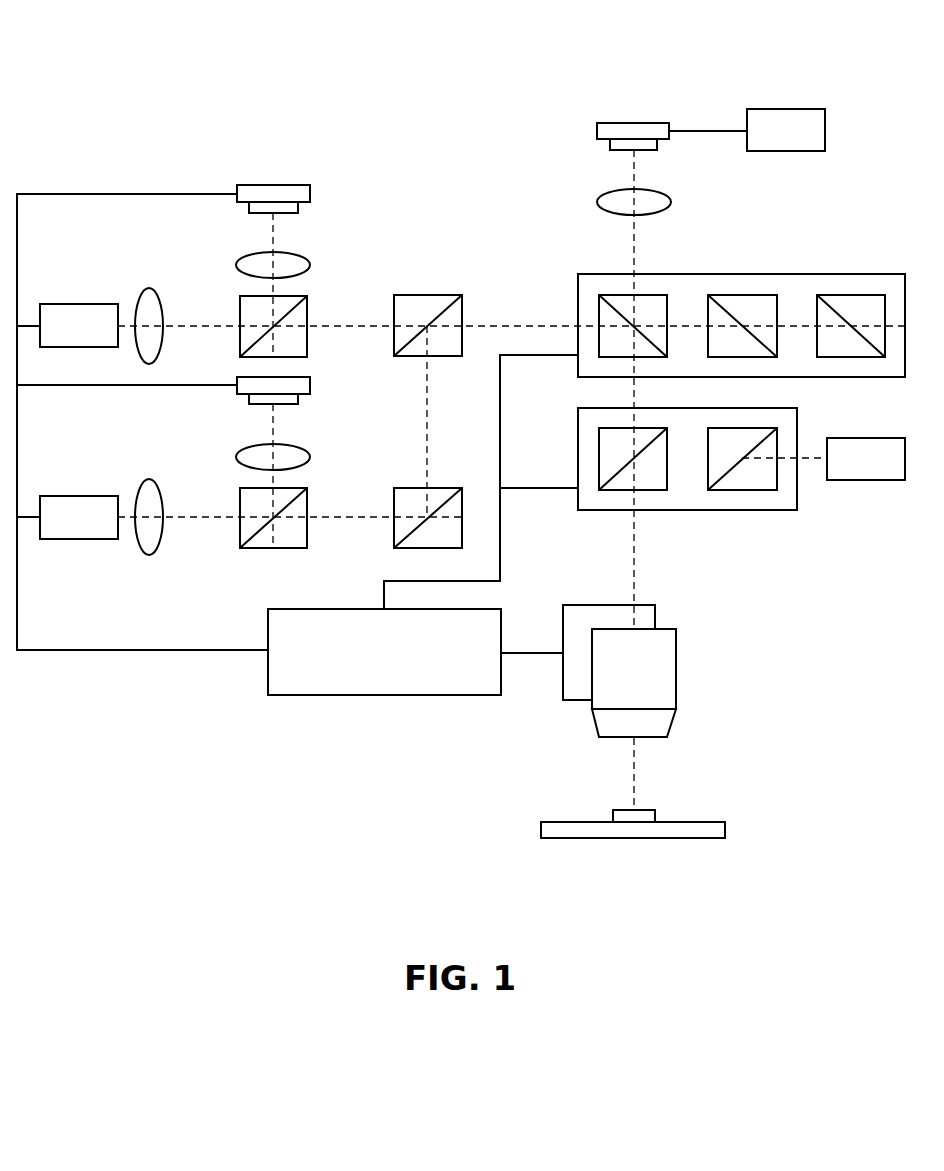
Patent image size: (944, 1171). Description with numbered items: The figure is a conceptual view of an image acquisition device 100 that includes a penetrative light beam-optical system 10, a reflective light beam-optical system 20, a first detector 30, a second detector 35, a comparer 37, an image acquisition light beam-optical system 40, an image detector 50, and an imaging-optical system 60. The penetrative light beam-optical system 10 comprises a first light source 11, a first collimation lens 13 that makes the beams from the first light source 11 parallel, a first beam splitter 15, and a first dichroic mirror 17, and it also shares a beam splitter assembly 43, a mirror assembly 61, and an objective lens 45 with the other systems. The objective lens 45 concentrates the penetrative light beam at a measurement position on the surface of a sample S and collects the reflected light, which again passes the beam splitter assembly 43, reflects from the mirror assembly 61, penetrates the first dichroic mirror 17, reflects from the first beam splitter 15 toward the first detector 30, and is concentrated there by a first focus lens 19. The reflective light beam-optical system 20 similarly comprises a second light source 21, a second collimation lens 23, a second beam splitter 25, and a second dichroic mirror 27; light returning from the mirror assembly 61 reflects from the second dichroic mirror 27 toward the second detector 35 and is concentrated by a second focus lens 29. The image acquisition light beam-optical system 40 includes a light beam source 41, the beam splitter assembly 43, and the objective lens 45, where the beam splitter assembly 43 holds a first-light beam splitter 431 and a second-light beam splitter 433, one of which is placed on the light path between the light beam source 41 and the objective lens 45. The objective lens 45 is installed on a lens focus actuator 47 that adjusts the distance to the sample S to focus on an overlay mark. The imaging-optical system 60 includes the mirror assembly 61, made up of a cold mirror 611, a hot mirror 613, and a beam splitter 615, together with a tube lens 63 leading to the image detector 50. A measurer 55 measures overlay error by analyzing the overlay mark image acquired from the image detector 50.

The image acquisition device 100 is at (81, 38).
The penetrative light beam-optical system 10 is at (350, 278).
The first light source 11 is at (98, 304).
The first collimation lens 13 is at (149, 288).
The first beam splitter 15 is at (240, 308).
The first dichroic mirror 17 is at (444, 295).
The first focus lens 19 is at (302, 254).
The first detector 30 is at (273, 185).
The reflective light beam-optical system 20 is at (350, 478).
The second light source 21 is at (98, 496).
The second collimation lens 23 is at (149, 479).
The second beam splitter 25 is at (248, 550).
The second dichroic mirror 27 is at (444, 488).
The second focus lens 29 is at (302, 446).
The second detector 35 is at (243, 395).
The comparer 37 is at (385, 697).
The image acquisition light beam-optical system 40 is at (812, 540).
The light beam source 41 is at (865, 480).
The beam splitter assembly 43 is at (688, 510).
The first-light beam splitter 431 is at (613, 490).
The second-light beam splitter 433 is at (742, 490).
The objective lens 45 is at (676, 670).
The lens focus actuator 47 is at (573, 702).
The image detector 50 is at (633, 123).
The measurer 55 is at (785, 109).
The imaging-optical system 60 is at (810, 232).
The mirror assembly 61 is at (682, 274).
The cold mirror 611 is at (742, 295).
The hot mirror 613 is at (852, 295).
The beam splitter 615 is at (609, 295).
The tube lens 63 is at (597, 202).
The sample S is at (657, 815).